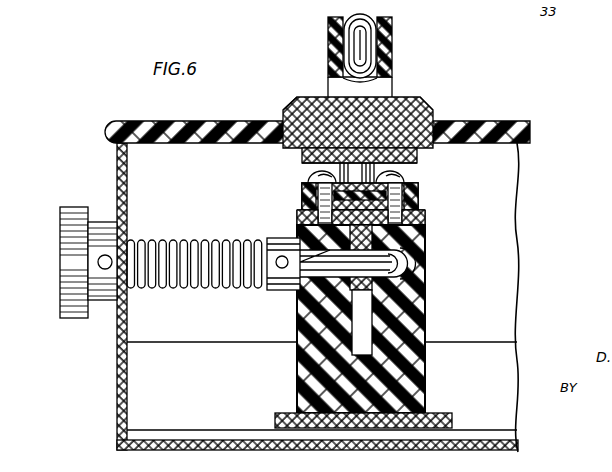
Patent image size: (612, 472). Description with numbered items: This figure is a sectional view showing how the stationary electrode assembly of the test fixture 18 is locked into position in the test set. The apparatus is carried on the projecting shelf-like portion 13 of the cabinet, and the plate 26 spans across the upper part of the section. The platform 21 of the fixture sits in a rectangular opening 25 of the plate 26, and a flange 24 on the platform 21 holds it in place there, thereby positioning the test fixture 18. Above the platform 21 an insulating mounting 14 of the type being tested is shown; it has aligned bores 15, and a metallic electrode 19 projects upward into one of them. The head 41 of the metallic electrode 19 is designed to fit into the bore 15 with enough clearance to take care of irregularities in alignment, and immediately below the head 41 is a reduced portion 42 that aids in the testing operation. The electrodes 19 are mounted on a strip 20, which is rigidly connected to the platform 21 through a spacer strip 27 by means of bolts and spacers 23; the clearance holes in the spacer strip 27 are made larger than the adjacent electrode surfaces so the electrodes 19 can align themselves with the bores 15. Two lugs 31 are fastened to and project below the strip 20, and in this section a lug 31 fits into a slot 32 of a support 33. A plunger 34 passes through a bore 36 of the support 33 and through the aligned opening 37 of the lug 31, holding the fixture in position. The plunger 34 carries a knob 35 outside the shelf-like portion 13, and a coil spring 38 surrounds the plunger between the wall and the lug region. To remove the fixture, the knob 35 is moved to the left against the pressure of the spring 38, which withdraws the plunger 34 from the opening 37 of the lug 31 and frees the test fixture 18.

The shelf-like portion 13 is at (118, 170).
The insulating mounting 14 is at (332, 32).
The bore 15 is at (384, 50).
The test fixture 18 is at (429, 95).
The metallic electrode 19 is at (378, 18).
The strip 20 is at (419, 197).
The platform 21 is at (307, 97).
The spacer 23 is at (322, 174).
The flange 24 is at (286, 116).
The rectangular opening 25 is at (419, 150).
The plate 26 is at (531, 131).
The spacer strip 27 is at (412, 164).
The lug 31 is at (298, 219).
The slot 32 is at (372, 345).
The support 33 is at (426, 313).
The plunger 34 is at (300, 290).
The knob 35 is at (75, 318).
The bore 36 is at (416, 260).
The opening 37 is at (408, 270).
The spring 38 is at (208, 240).
The head 41 is at (356, 43).
The reduced portion 42 is at (343, 79).